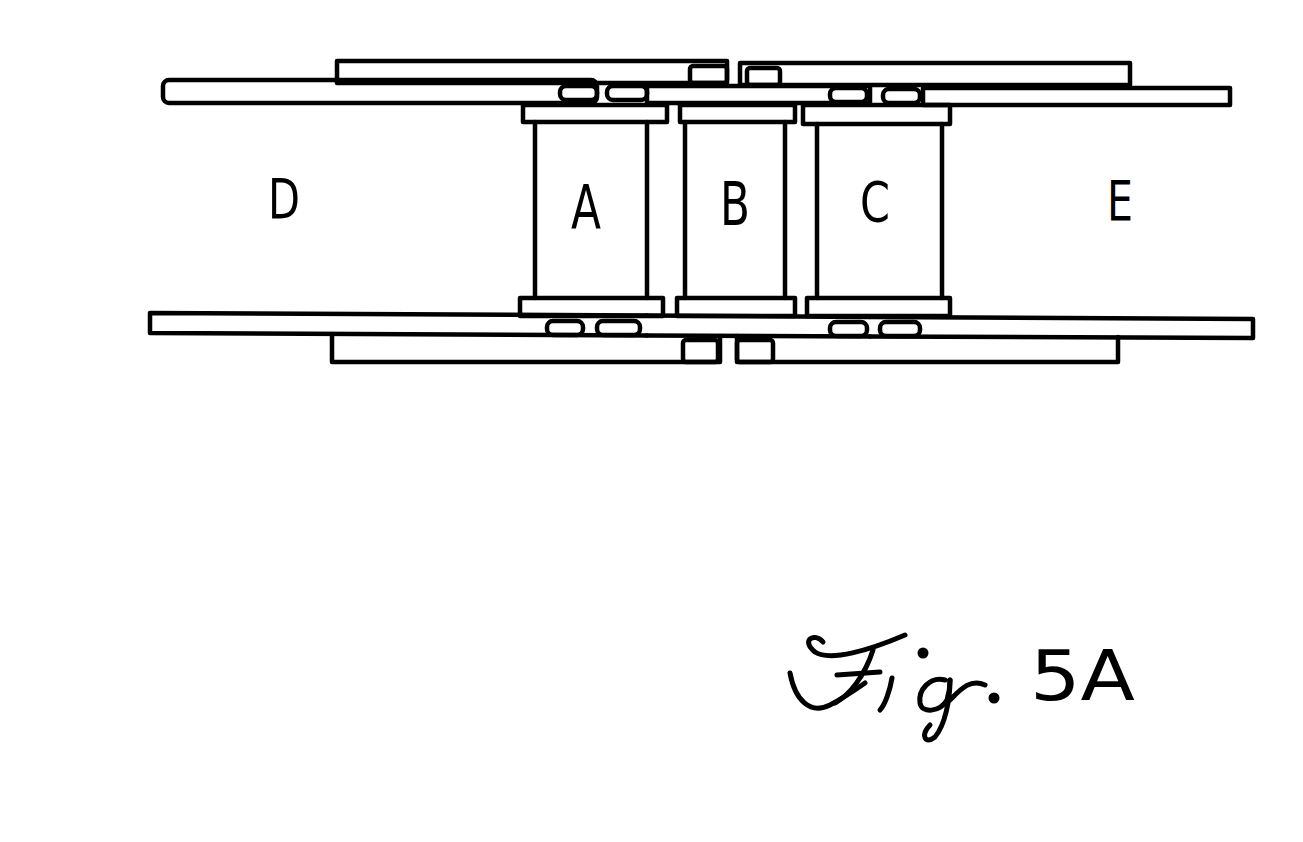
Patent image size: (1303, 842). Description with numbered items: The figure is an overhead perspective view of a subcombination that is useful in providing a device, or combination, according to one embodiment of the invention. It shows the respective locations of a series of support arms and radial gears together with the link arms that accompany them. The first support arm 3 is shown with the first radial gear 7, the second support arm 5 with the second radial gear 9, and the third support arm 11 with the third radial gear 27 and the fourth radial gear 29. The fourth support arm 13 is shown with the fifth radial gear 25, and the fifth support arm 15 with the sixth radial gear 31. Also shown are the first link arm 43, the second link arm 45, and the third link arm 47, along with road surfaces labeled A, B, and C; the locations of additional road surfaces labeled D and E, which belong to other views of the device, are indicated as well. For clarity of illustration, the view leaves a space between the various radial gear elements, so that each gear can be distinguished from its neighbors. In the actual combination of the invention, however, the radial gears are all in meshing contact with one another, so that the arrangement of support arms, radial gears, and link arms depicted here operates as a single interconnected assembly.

The first support arm 3 is at (460, 345).
The second support arm 5 is at (1048, 350).
The first radial gear 7 is at (698, 365).
The second radial gear 9 is at (752, 367).
The third support arm 11 is at (687, 320).
The fourth support arm 13 is at (193, 322).
The fifth support arm 15 is at (1197, 328).
The fifth radial gear 25 is at (567, 322).
The third radial gear 27 is at (603, 320).
The fourth radial gear 29 is at (847, 363).
The sixth radial gear 31 is at (903, 365).
The first link arm 43 is at (590, 312).
The second link arm 45 is at (728, 295).
The third link arm 47 is at (910, 315).